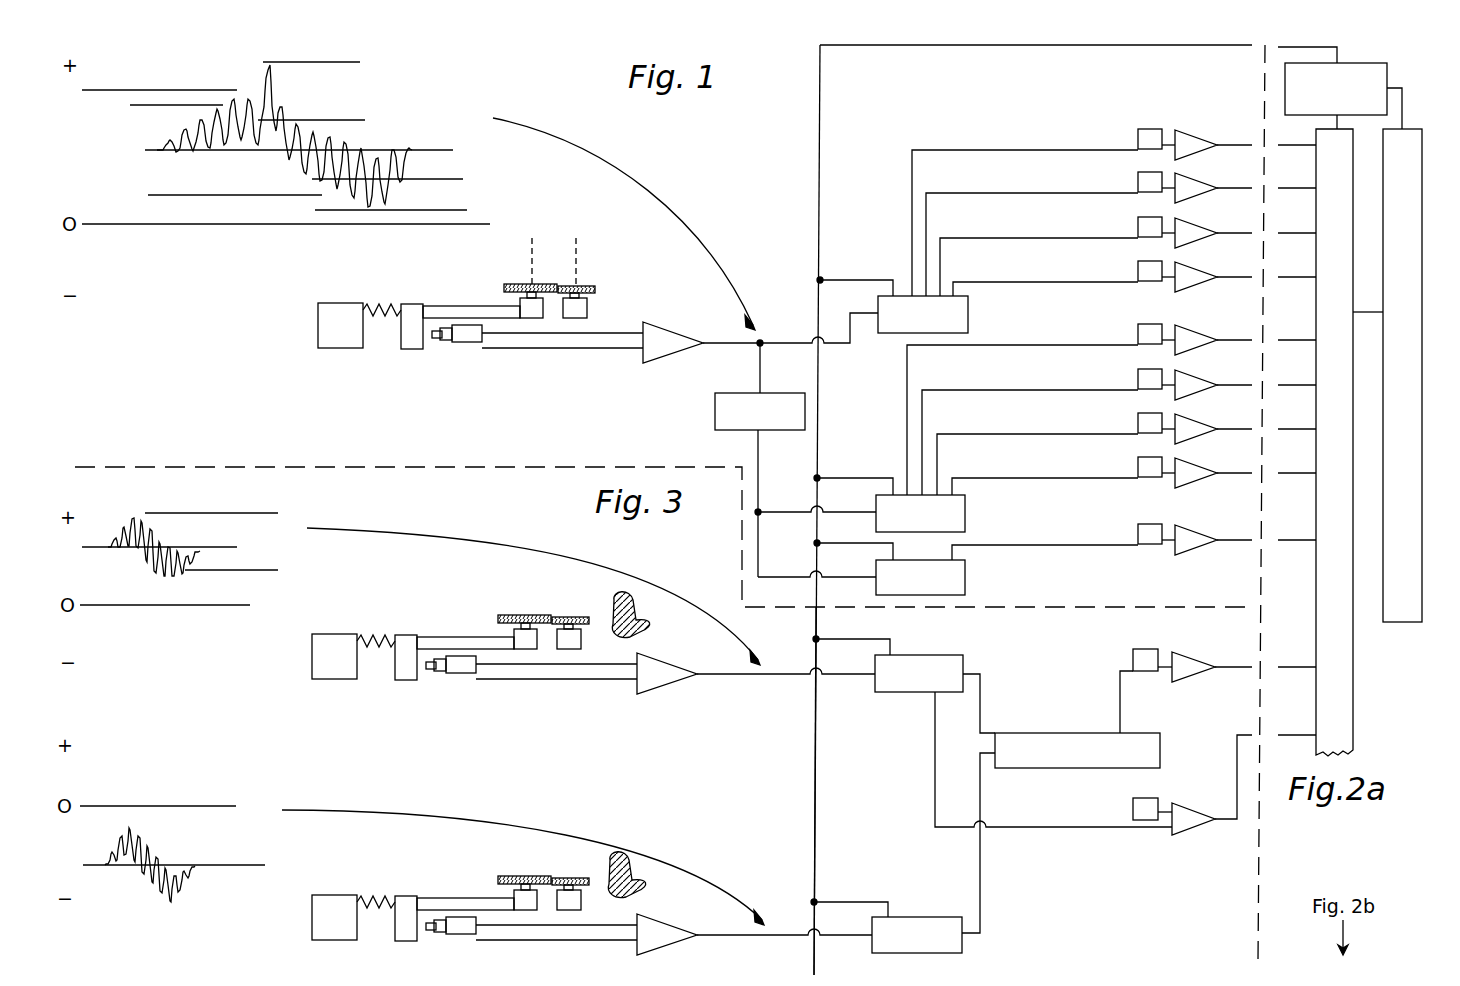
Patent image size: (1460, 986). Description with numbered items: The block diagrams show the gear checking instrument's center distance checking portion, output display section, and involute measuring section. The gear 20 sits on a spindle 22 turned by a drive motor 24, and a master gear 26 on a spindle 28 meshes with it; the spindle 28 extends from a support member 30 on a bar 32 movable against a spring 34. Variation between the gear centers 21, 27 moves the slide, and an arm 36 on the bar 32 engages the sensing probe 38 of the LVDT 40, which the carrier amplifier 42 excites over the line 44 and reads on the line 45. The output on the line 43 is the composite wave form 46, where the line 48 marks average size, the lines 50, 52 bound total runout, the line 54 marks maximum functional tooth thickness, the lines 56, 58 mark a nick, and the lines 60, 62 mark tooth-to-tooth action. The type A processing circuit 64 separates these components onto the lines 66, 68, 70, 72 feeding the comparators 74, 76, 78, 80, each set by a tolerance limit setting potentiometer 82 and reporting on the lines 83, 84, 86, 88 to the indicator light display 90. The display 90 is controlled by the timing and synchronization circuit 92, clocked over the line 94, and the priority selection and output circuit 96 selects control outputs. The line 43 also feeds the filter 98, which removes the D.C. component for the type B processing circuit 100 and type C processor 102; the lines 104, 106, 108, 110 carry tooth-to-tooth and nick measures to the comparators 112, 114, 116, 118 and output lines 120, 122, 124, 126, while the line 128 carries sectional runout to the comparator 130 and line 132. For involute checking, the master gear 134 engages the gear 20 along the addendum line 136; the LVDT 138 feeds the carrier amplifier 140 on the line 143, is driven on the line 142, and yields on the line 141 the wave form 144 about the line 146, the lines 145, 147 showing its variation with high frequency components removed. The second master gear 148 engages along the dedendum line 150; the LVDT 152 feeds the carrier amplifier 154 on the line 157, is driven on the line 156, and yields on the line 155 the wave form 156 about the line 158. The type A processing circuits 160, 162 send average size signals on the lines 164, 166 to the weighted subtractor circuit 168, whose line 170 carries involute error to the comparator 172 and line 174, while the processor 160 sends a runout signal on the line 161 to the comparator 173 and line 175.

In FIG. 1, the gear 20 is at (584, 286).
In FIG. 3, the gear 20 is at (573, 617).
In FIG. 1, the gear center 21 is at (574, 238).
In FIG. 1, the spindle 22 is at (590, 293).
In FIG. 1, the drive motor 24 is at (587, 308).
In FIG. 1, the master gear 26 is at (512, 284).
In FIG. 1, the gear center 27 is at (532, 238).
In FIG. 1, the spindle 28 is at (520, 298).
In FIG. 1, the support member 30 is at (528, 318).
In FIG. 1, the bar 32 is at (440, 306).
In FIG. 1, the spring 34 is at (346, 303).
In FIG. 1, the arm 36 is at (407, 349).
In FIG. 1, the sensing probe 38 is at (438, 340).
In FIG. 1, the LVDT 40 is at (467, 342).
In FIG. 1, the carrier amplifier 42 is at (651, 355).
In FIG. 1, the line 43 is at (720, 343).
In FIG. 1, the line 44 is at (575, 348).
In FIG. 1, the line 45 is at (622, 333).
In FIG. 1, the wave form 46 is at (432, 106).
In FIG. 1, the line 48 is at (246, 150).
In FIG. 1, the line 50 is at (168, 195).
In FIG. 1, the line 52 is at (138, 105).
In FIG. 1, the line 54 is at (170, 90).
In FIG. 1, the line 56 is at (347, 120).
In FIG. 1, the line 58 is at (349, 62).
In FIG. 1, the line 60 is at (473, 210).
In FIG. 1, the line 62 is at (470, 179).
In FIG. 1, the type A processing circuit 64 is at (886, 333).
In FIG. 1, the output line 66 is at (972, 150).
In FIG. 1, the line 68 is at (979, 193).
In FIG. 1, the line 70 is at (989, 238).
In FIG. 1, the line 72 is at (1015, 282).
In FIG. 1, the comparator 74 is at (1190, 138).
In FIG. 1, the comparator 76 is at (1196, 188).
In FIG. 1, the comparator 78 is at (1196, 233).
In FIG. 1, the comparator 80 is at (1196, 276).
In FIG. 1, the tolerance limit setting potentiometer 82 is at (1136, 136).
In FIG. 3, the tolerance limit setting potentiometer 82 is at (1133, 659).
In FIG. 1, the output line 83 is at (1236, 145).
In FIG. 1, the output line 84 is at (1240, 188).
In FIG. 1, the output line 86 is at (1236, 233).
In FIG. 1, the output line 88 is at (1239, 277).
In FIG. 2A, the indicator light display 90 is at (1353, 700).
In FIG. 2A, the timing and synchronization circuit 92 is at (1387, 75).
In FIG. 1, the line 94 is at (858, 281).
In FIG. 2A, the line 94 is at (1337, 47).
In FIG. 3, the line 94 is at (816, 690).
In FIG. 2A, the priority selection and output circuit 96 is at (1402, 622).
In FIG. 1, the filter 98 is at (715, 411).
In FIG. 1, the type B processing circuit 100 is at (965, 512).
In FIG. 1, the type C processor 102 is at (965, 577).
In FIG. 1, the output line 104 is at (1018, 345).
In FIG. 1, the line 106 is at (986, 390).
In FIG. 1, the line 108 is at (993, 434).
In FIG. 1, the line 110 is at (1001, 478).
In FIG. 1, the comparator 112 is at (1192, 334).
In FIG. 1, the comparator 114 is at (1186, 376).
In FIG. 1, the comparator 116 is at (1184, 421).
In FIG. 1, the comparator 118 is at (1184, 466).
In FIG. 1, the output line 120 is at (1235, 341).
In FIG. 1, the output line 122 is at (1235, 386).
In FIG. 1, the output line 124 is at (1235, 429).
In FIG. 1, the output line 126 is at (1235, 473).
In FIG. 1, the line 128 is at (1047, 545).
In FIG. 1, the comparator 130 is at (1190, 529).
In FIG. 1, the output line 132 is at (1234, 540).
In FIG. 3, the master gear 134 is at (498, 603).
In FIG. 3, the addendum line 136 is at (641, 598).
In FIG. 3, the LVDT 138 is at (434, 685).
In FIG. 3, the carrier amplifier 140 is at (632, 683).
In FIG. 3, the line 141 is at (725, 674).
In FIG. 3, the line 142 is at (527, 675).
In FIG. 3, the line 143 is at (609, 649).
In FIG. 3, the wave form 144 is at (176, 526).
In FIG. 3, the threshold level line 145 is at (262, 570).
In FIG. 3, the line 146 is at (213, 547).
In FIG. 3, the line 147 is at (267, 513).
In FIG. 3, the second master gear 148 is at (502, 860).
In FIG. 3, the dedendum line 150 is at (648, 866).
In FIG. 3, the LVDT 152 is at (422, 943).
In FIG. 3, the carrier amplifier 154 is at (626, 940).
In FIG. 3, the line 155 is at (725, 935).
In FIG. 3, the wave form 156 is at (148, 888).
In FIG. 3, the line 157 is at (609, 913).
In FIG. 3, the line 158 is at (236, 865).
In FIG. 3, the type A processing circuit 160 is at (918, 692).
In FIG. 3, the line 161 is at (1072, 827).
In FIG. 3, the type A processing circuit 162 is at (920, 917).
In FIG. 3, the line 164 is at (1003, 671).
In FIG. 3, the line 166 is at (980, 905).
In FIG. 3, the weighted subtractor circuit 168 is at (1160, 745).
In FIG. 3, the output line 170 is at (1120, 690).
In FIG. 3, the comparator 172 is at (1186, 666).
In FIG. 3, the comparator 173 is at (1200, 813).
In FIG. 3, the line 174 is at (1228, 668).
In FIG. 3, the line 175 is at (1228, 820).